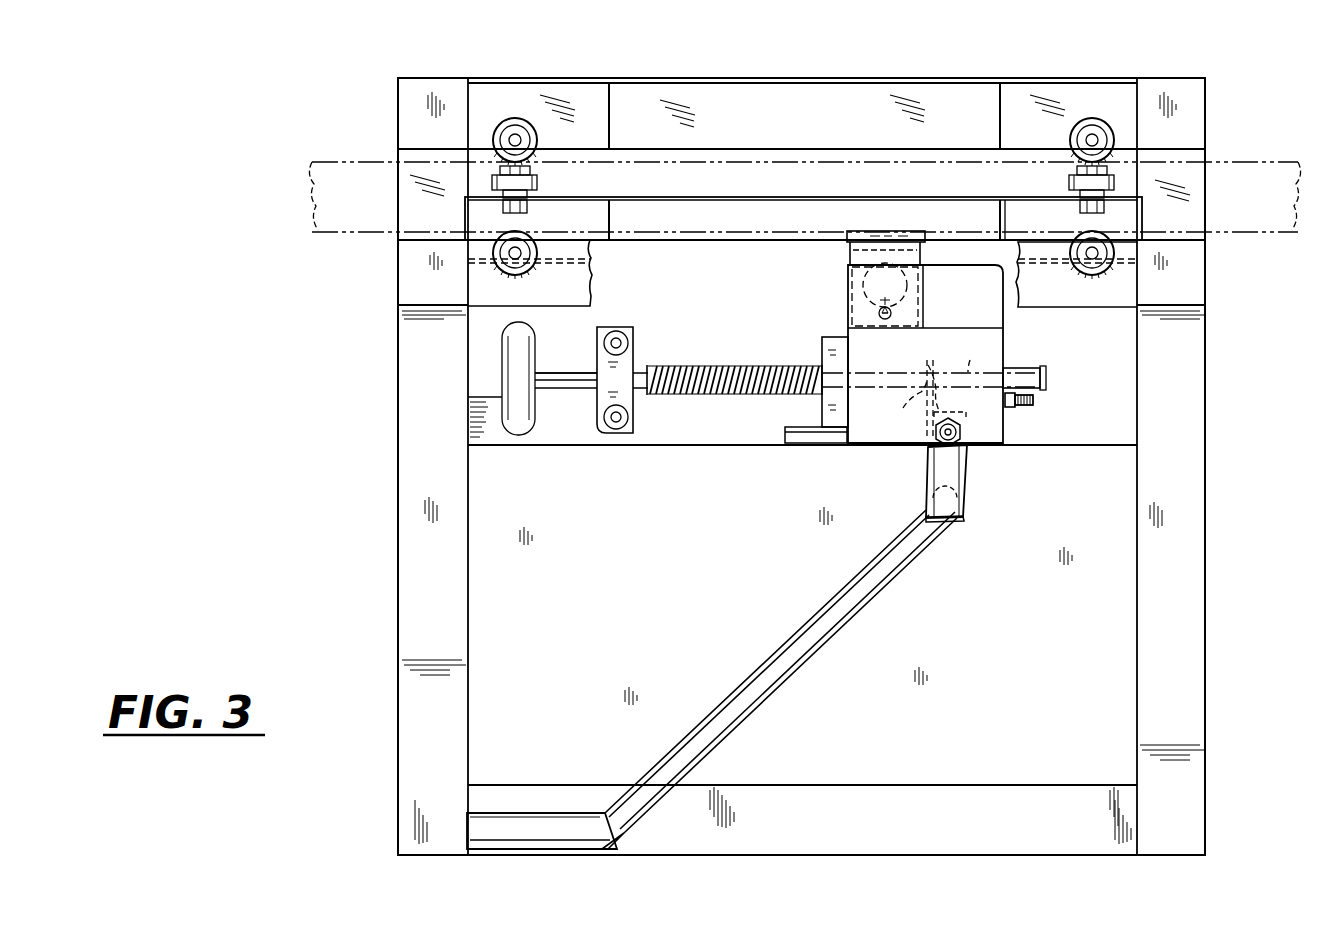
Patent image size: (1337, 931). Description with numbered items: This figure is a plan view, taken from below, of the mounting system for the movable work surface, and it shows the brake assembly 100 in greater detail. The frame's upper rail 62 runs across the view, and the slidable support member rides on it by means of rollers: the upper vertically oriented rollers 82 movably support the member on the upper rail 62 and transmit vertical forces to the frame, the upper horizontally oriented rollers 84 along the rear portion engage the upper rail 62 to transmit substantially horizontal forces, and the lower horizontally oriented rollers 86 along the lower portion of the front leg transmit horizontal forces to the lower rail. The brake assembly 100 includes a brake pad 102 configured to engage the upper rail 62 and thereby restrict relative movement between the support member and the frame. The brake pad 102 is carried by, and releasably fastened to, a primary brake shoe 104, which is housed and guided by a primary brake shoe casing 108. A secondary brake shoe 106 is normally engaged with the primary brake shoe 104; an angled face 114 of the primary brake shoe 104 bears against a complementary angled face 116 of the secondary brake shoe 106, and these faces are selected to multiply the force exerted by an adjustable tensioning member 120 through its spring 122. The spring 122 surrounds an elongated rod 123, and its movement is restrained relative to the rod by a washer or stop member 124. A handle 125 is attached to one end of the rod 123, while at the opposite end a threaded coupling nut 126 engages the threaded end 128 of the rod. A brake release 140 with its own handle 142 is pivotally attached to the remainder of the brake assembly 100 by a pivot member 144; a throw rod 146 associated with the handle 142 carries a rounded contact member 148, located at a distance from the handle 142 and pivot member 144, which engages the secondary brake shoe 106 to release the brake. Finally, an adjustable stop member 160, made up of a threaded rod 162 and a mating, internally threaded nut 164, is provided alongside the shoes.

The upper rail 62 is at (320, 232).
The upper vertically oriented rollers 82 is at (538, 180).
The upper horizontally oriented rollers 84 is at (516, 118).
The lower horizontally oriented rollers 86 is at (499, 260).
The brake assembly 100 is at (740, 445).
The brake pad 102 is at (885, 232).
The primary brake shoe 104 is at (848, 324).
The secondary brake shoe 106 is at (831, 415).
The primary brake shoe casing 108 is at (844, 264).
The angled face 114 is at (892, 360).
The angled face 116 is at (848, 324).
The adjustable tensioning member 120 is at (562, 392).
The spring 122 is at (710, 362).
The elongated rod 123 is at (562, 368).
The stop member 124 is at (641, 400).
The handle 125 is at (510, 369).
The threaded coupling nut 126 is at (1029, 370).
The threaded end 128 is at (972, 383).
The brake release 140 is at (722, 690).
The handle 142 is at (522, 812).
The pivot member 144 is at (960, 454).
The throw rod 146 is at (904, 408).
The rounded contact member 148 is at (934, 355).
The adjustable stop member 160 is at (1028, 405).
The threaded rod 162 is at (1036, 404).
The internally threaded nut 164 is at (1004, 408).